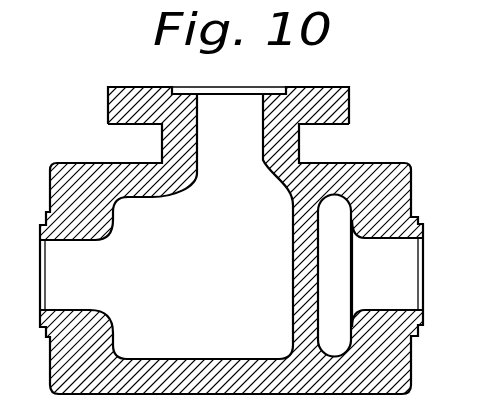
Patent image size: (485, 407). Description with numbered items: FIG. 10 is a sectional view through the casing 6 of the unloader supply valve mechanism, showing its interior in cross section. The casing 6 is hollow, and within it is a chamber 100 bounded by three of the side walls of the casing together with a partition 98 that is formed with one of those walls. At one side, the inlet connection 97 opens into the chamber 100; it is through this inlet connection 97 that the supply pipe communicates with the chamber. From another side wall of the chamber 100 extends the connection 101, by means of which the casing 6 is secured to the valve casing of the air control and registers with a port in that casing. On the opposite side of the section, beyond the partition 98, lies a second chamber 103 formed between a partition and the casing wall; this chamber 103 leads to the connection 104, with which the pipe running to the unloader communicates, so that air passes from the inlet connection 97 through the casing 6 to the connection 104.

The casing 6 is at (340, 167).
The connection 101 is at (343, 97).
The chamber 100 is at (203, 226).
The inlet connection 97 is at (76, 276).
The partition 98 is at (305, 276).
The chamber 103 is at (343, 253).
The connection 104 is at (387, 273).